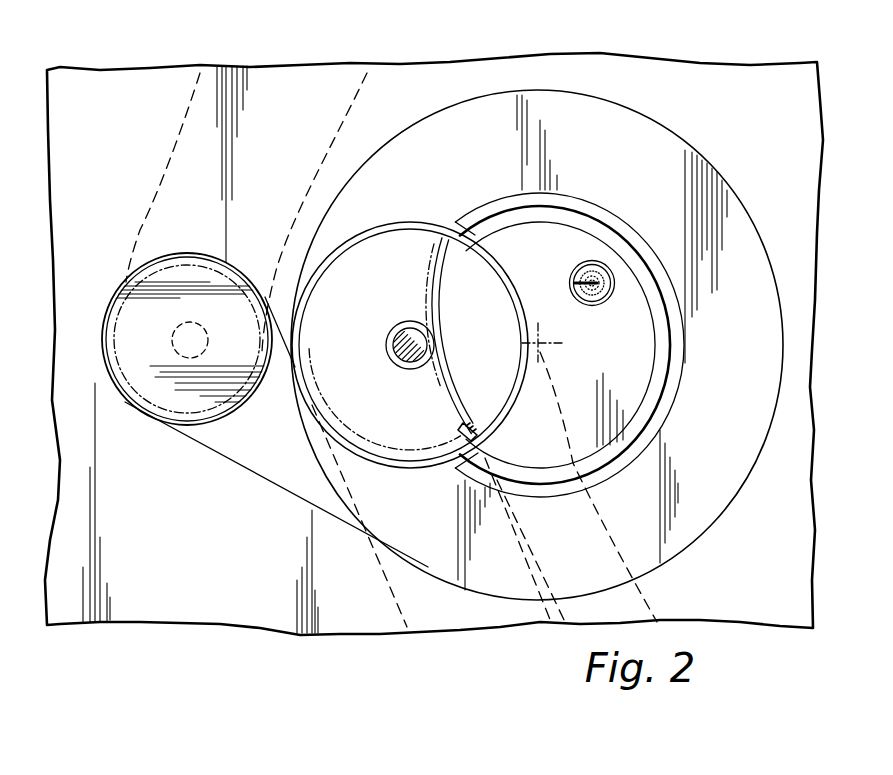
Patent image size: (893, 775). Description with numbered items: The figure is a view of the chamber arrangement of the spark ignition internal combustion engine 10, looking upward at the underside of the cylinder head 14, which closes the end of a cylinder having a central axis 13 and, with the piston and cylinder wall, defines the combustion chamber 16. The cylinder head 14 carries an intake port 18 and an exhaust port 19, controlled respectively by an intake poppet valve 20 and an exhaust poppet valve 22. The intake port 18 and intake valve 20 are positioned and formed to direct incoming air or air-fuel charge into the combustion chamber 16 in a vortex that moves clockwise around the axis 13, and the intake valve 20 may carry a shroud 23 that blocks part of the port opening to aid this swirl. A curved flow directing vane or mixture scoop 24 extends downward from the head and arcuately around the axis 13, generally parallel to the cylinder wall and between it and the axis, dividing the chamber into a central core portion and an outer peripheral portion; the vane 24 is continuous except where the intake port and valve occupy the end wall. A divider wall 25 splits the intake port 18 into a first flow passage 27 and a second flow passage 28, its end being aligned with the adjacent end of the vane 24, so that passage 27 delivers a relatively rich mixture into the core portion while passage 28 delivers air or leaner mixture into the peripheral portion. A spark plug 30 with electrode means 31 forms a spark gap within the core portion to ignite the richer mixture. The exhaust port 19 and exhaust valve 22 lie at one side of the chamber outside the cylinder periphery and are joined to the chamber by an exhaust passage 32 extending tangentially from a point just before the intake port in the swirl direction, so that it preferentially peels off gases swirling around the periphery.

The spark ignition internal combustion engine 10 is at (792, 58).
The central axis 13 is at (562, 343).
The cylinder head 14 is at (720, 80).
The combustion chamber 16 is at (595, 125).
The intake port 18 is at (393, 589).
The exhaust port 19 is at (170, 172).
The intake poppet valve 20 is at (405, 328).
The exhaust poppet valve 22 is at (228, 290).
The shroud 23 is at (322, 382).
The flow directing vane 24 is at (588, 220).
The divider wall 25 is at (450, 397).
The first flow passage 27 is at (487, 283).
The second flow passage 28 is at (367, 422).
The spark plug 30 is at (608, 293).
The electrode means 31 is at (598, 280).
The exhaust passage 32 is at (332, 508).